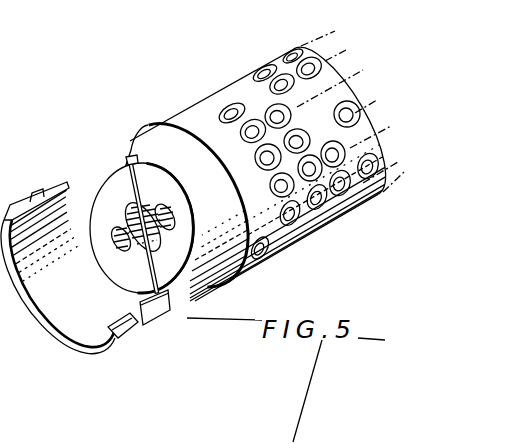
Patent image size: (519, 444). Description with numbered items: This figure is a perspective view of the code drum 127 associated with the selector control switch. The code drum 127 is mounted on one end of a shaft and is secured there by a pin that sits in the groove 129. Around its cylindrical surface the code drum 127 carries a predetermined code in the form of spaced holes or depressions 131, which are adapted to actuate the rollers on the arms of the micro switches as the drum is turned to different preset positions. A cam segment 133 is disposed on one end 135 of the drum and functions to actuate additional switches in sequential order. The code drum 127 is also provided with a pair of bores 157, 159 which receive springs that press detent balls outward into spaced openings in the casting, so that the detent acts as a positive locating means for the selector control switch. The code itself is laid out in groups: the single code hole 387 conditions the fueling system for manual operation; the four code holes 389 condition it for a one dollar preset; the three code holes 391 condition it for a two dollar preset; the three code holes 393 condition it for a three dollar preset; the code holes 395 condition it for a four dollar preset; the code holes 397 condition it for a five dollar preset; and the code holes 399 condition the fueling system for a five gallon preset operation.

The code drum 127 is at (197, 97).
The groove 129 is at (133, 161).
The spaced holes or depressions 131 is at (284, 82).
The cam segment 133 is at (53, 307).
The end of the drum 135 is at (203, 270).
The bore 157 is at (165, 211).
The bore 159 is at (116, 230).
The code hole 387 is at (265, 252).
The code holes 389 is at (365, 177).
The code holes 391 is at (276, 183).
The code holes 393 is at (302, 138).
The code holes 395 is at (243, 135).
The code holes 397 is at (248, 95).
The code holes 399 is at (270, 70).